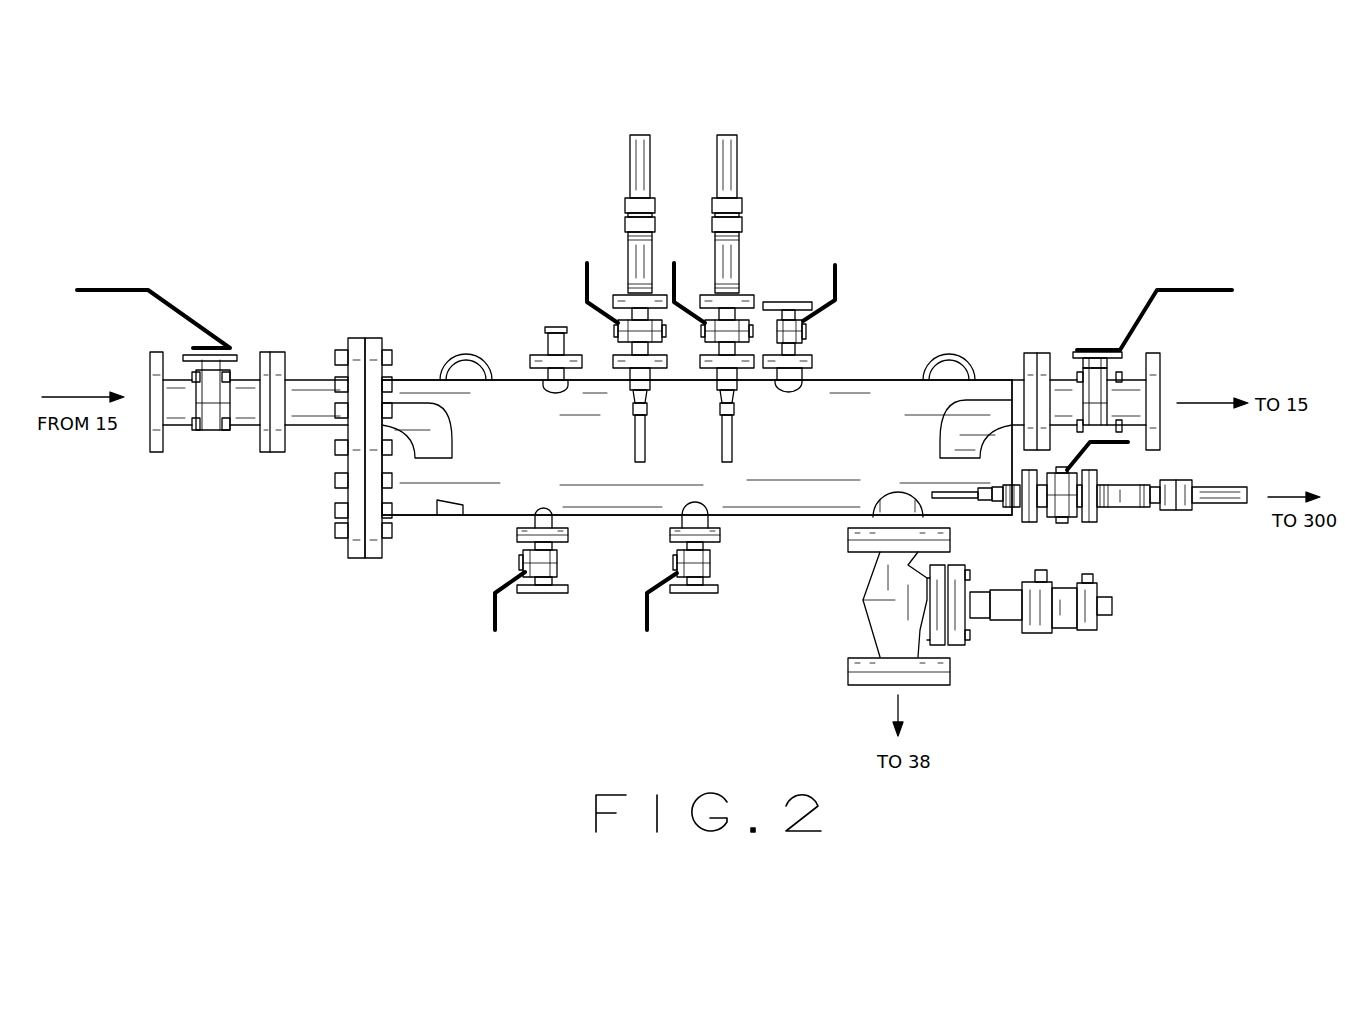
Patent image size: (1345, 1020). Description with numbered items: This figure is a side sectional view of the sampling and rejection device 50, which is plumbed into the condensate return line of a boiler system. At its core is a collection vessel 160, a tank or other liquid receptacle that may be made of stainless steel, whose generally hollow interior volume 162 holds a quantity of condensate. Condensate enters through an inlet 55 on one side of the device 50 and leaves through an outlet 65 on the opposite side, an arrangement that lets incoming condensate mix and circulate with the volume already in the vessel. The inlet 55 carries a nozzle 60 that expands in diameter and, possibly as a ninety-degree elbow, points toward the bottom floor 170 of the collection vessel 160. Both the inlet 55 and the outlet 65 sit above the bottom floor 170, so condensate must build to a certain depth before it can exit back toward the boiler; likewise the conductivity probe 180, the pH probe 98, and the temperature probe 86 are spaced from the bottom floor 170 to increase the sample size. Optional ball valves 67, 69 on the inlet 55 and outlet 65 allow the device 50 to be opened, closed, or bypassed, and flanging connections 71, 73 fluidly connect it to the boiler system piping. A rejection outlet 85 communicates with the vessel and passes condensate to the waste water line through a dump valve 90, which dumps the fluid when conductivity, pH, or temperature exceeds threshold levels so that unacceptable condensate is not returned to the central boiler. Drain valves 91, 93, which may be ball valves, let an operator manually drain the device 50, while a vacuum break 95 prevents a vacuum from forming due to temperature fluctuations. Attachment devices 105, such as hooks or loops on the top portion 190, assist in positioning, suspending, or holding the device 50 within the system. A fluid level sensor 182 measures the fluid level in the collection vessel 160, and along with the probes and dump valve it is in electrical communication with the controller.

The sampling and rejection device 50 is at (503, 148).
The inlet 55 is at (302, 392).
The nozzle 60 is at (422, 418).
The outlet 65 is at (1063, 387).
The valve 67 is at (208, 363).
The valve 69 is at (1117, 373).
The flanging connection 71 is at (273, 375).
The flanging connection 73 is at (1038, 380).
The rejection outlet 85 is at (905, 513).
The temperature probe 86 is at (739, 243).
The dump valve 90 is at (883, 597).
The drain valve 91 is at (543, 593).
The drain valve 93 is at (695, 593).
The vacuum break 95 is at (547, 352).
The pH probe 98 is at (627, 245).
The attachment device 105 is at (455, 353).
The collection vessel 160 is at (877, 380).
The interior volume 162 is at (788, 493).
The bottom floor 170 is at (612, 517).
The conductivity probe 180 is at (1127, 507).
The fluid level sensor 182 is at (447, 513).
The top portion 190 is at (833, 378).